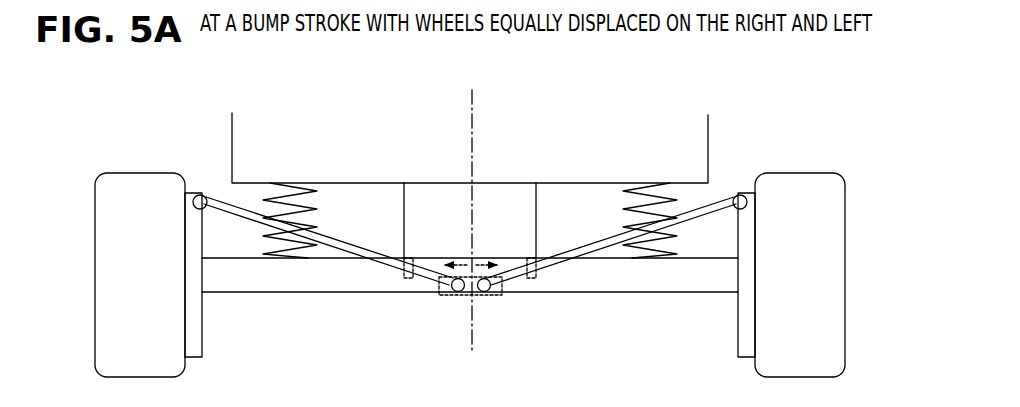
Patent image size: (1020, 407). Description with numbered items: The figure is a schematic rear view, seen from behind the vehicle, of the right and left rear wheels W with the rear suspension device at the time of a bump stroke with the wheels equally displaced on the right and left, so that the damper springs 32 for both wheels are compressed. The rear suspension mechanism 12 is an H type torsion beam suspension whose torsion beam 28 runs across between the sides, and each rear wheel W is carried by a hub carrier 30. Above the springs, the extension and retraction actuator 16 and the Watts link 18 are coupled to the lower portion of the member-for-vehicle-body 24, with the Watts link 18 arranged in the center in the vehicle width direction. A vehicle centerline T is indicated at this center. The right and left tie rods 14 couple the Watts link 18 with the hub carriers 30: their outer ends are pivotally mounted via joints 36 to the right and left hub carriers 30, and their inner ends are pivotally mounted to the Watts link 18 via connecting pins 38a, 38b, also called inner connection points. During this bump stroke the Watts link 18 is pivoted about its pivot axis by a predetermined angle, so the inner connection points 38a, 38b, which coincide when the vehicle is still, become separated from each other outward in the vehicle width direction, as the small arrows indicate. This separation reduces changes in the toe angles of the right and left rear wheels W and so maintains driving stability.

The rear wheel W is at (140, 172).
The vehicle center line T is at (474, 152).
The rear suspension mechanism 12 is at (355, 300).
The tie rod 14 is at (337, 250).
The extension and retraction actuator 16 is at (540, 228).
The Watts link 18 is at (502, 296).
The member-for-vehicle-body 24 is at (710, 116).
The torsion beam 28 is at (398, 294).
The hub carrier 30 is at (202, 325).
The damper spring 32 is at (272, 248).
The joint 36 is at (203, 195).
The connecting pin 38a is at (453, 292).
The connecting pin 38b is at (484, 292).